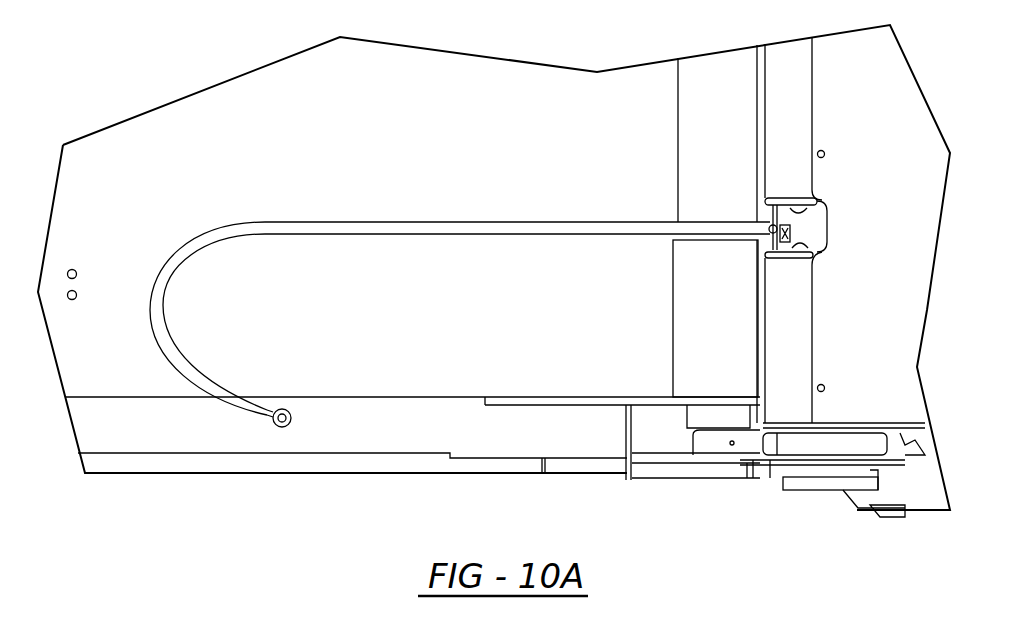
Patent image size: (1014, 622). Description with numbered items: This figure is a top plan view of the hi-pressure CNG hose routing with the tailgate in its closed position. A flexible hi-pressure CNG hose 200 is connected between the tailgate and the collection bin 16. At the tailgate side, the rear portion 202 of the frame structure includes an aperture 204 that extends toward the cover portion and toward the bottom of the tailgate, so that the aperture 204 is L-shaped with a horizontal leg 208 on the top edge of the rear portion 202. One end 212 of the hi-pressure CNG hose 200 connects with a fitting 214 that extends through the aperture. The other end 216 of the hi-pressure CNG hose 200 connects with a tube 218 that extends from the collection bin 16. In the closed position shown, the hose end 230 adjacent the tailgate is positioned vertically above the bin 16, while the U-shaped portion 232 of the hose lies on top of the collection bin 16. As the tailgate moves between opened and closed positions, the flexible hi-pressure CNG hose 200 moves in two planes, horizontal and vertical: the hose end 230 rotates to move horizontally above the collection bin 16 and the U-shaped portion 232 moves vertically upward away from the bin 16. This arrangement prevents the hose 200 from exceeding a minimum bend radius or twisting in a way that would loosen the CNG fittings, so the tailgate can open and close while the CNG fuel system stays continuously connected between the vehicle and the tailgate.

The collection bin 16 is at (193, 430).
The flexible hi-pressure CNG hose 200 is at (437, 190).
The rear portion of the frame structure 202 is at (790, 293).
The aperture 204 is at (820, 200).
The horizontal leg 208 is at (813, 248).
The one end of the hi-pressure CNG hose 212 is at (790, 228).
The fitting 214 is at (825, 240).
The other end of the hi-pressure CNG hose 216 is at (267, 420).
The tube 218 is at (293, 420).
The hose end adjacent the tailgate 230 is at (667, 222).
The U-shaped portion 232 is at (153, 293).